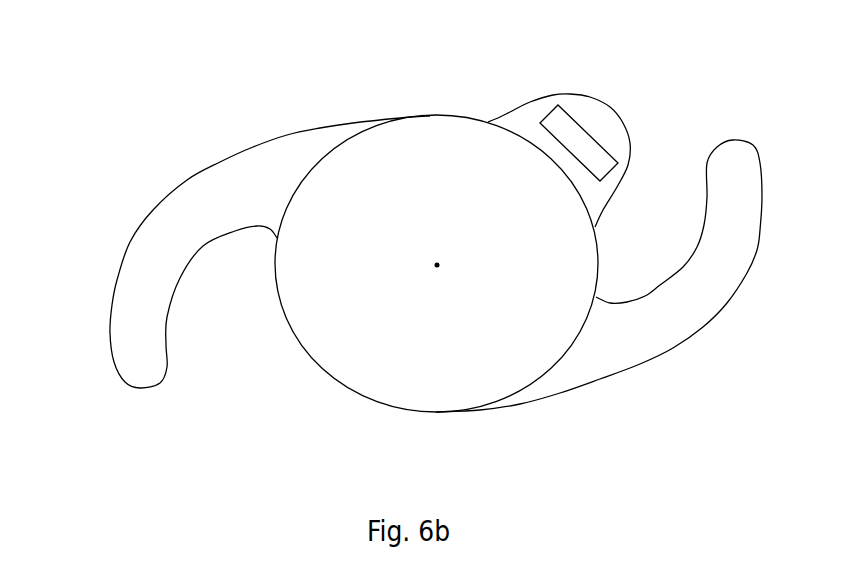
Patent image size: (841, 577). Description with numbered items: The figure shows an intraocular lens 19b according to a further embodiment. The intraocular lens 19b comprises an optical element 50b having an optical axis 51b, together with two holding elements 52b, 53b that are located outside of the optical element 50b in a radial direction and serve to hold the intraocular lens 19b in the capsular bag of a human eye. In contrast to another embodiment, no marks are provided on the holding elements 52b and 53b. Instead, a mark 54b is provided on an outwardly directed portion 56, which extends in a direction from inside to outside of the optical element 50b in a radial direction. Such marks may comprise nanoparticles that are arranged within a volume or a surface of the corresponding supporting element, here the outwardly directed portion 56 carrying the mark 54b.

The intraocular lens 19b is at (486, 88).
The optical element 50b is at (433, 413).
The optical axis 51b is at (432, 268).
The holding element 52b is at (690, 371).
The holding element 53b is at (104, 234).
The mark 54b is at (575, 121).
The outwardly directed portion 56 is at (632, 145).